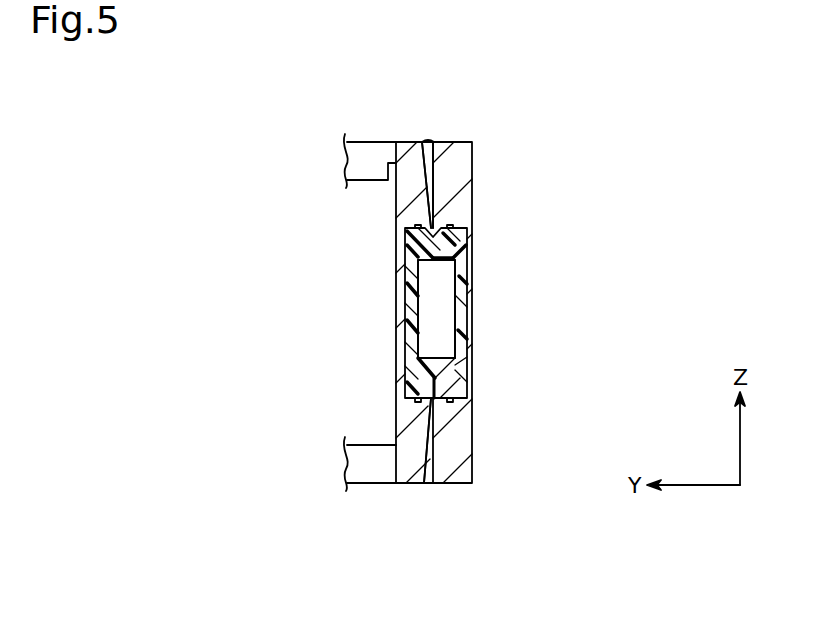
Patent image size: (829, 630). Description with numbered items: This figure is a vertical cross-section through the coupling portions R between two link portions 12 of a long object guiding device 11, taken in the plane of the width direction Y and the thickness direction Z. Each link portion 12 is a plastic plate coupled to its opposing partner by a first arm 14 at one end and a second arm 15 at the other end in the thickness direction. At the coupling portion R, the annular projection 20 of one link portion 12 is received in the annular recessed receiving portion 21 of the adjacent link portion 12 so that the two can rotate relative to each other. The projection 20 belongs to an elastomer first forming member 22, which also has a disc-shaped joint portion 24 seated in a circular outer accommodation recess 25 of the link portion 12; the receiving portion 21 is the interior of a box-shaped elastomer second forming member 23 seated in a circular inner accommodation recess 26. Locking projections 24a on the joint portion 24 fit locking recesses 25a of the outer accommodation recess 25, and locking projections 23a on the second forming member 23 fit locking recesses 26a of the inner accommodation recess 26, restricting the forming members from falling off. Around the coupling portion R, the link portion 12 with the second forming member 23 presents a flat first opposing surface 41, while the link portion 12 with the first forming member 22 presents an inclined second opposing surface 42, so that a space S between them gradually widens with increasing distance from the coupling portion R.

The long object guiding device 11 is at (552, 118).
The link portion 12 is at (406, 142).
The first arm 14 is at (370, 150).
The second arm 15 is at (368, 477).
The first opposing surface 41 is at (430, 155).
The second opposing surface 42 is at (428, 185).
The space S is at (428, 484).
The projection 20 is at (456, 376).
The receiving portion 21 is at (456, 350).
The first forming member 22 is at (406, 253).
The second forming member 23 is at (468, 262).
The joint portion 24 is at (405, 312).
The outer accommodation recess 25 is at (405, 332).
The inner accommodation recess 26 is at (469, 288).
The locking projection 23a is at (450, 226).
The locking projection 24a is at (416, 226).
The locking recess 25a is at (414, 398).
The locking recess 26a is at (452, 401).
The coupling portion R is at (466, 316).